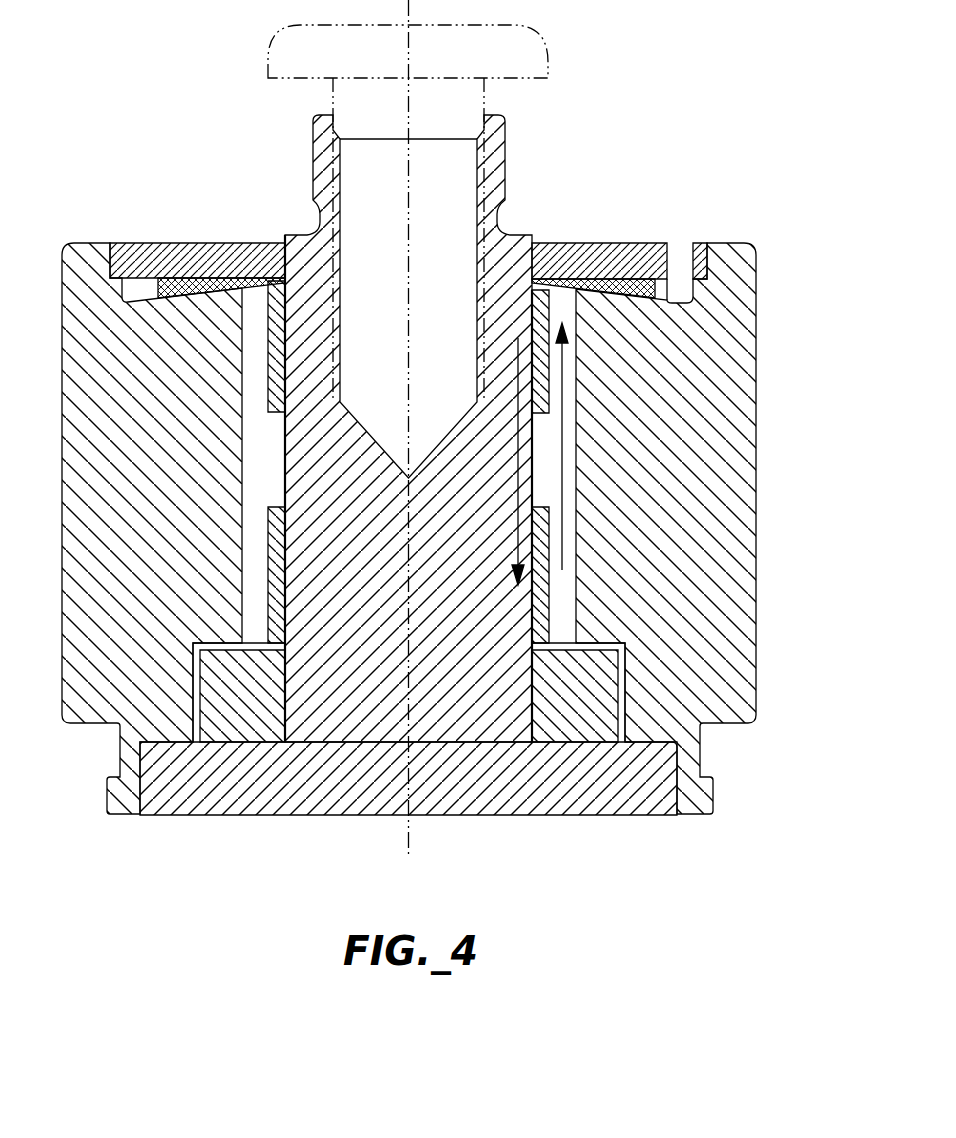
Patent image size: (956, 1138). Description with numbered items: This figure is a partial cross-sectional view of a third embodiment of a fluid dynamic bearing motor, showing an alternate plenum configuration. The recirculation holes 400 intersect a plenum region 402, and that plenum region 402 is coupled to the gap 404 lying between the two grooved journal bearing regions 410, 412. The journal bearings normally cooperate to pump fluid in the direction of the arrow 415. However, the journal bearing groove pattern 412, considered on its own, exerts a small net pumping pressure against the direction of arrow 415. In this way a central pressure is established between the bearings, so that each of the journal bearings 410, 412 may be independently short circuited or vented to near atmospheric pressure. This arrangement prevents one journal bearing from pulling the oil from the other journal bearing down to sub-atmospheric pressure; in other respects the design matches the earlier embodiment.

The recirculation holes 400 is at (560, 248).
The plenum region 402 is at (549, 433).
The gap 404 is at (522, 478).
The grooved journal bearing region 410 is at (530, 293).
The journal bearing groove pattern 412 is at (524, 478).
The arrow 415 is at (522, 478).